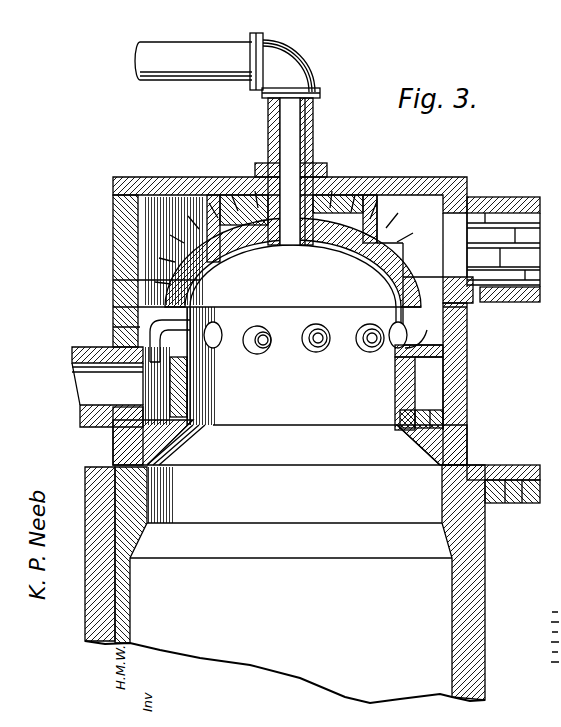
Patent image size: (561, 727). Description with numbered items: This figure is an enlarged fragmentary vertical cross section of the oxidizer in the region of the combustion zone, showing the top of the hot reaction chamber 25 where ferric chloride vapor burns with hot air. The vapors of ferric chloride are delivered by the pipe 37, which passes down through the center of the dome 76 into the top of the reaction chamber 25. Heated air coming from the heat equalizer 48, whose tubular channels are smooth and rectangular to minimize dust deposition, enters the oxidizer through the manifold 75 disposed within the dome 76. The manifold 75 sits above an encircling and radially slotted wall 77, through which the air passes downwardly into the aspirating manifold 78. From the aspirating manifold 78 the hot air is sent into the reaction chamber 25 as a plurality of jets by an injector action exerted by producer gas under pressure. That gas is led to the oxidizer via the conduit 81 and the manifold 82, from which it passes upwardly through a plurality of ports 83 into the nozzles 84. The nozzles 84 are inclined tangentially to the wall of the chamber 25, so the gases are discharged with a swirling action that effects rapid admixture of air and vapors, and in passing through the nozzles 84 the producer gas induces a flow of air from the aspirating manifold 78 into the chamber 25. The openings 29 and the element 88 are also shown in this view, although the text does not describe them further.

The reaction chamber 25 is at (295, 445).
The burner openings 29 is at (264, 348).
The pipe 37 is at (275, 147).
The heat equalizer 48 is at (507, 213).
The manifold 75 is at (410, 236).
The dome 76 is at (106, 204).
The radially slotted wall 77 is at (415, 290).
The aspirating manifold 78 is at (425, 318).
The conduit 81 is at (72, 353).
The manifold 82 is at (425, 382).
The ports 83 is at (108, 382).
The nozzles 84 is at (395, 345).
The opening 88 is at (175, 356).